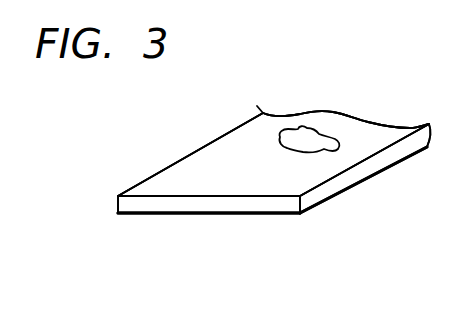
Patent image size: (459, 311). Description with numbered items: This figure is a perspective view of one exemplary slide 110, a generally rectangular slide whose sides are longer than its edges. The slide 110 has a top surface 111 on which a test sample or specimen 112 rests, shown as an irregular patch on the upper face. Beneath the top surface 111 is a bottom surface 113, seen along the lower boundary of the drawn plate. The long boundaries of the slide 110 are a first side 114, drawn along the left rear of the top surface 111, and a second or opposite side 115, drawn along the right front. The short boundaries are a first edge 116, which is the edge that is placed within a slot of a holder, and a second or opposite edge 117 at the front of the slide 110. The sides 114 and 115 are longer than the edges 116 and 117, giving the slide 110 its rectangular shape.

The slide 110 is at (146, 140).
The top surface 111 is at (247, 152).
The test sample or specimen 112 is at (327, 146).
The bottom surface 113 is at (132, 215).
The first side 114 is at (147, 180).
The second or opposite side 115 is at (313, 198).
The first edge 116 is at (347, 130).
The second or opposite edge 117 is at (213, 202).